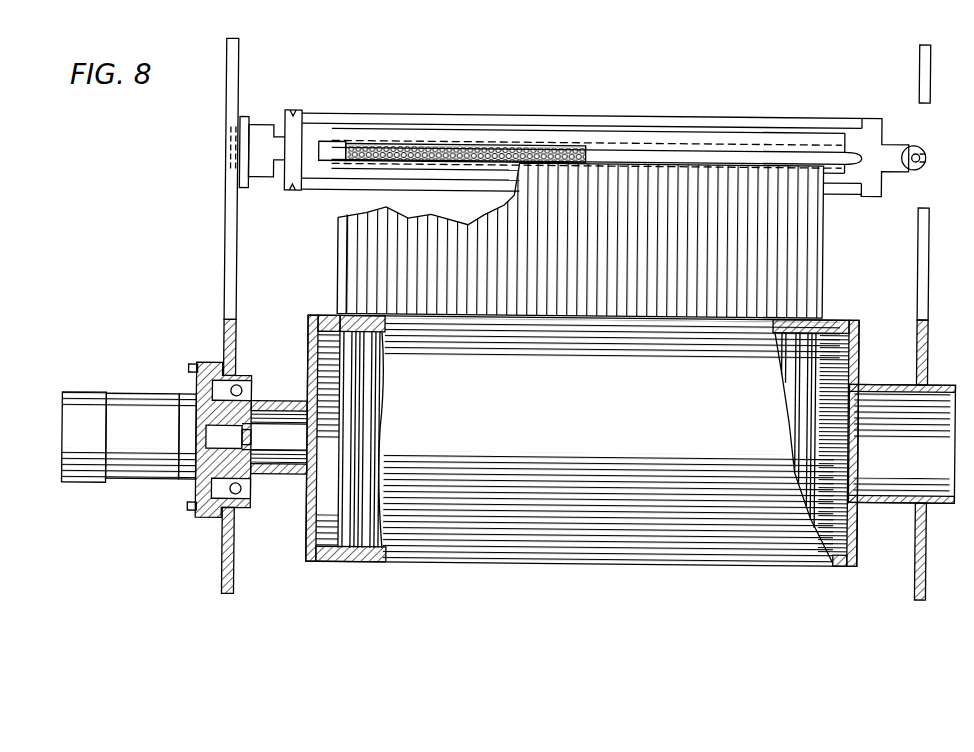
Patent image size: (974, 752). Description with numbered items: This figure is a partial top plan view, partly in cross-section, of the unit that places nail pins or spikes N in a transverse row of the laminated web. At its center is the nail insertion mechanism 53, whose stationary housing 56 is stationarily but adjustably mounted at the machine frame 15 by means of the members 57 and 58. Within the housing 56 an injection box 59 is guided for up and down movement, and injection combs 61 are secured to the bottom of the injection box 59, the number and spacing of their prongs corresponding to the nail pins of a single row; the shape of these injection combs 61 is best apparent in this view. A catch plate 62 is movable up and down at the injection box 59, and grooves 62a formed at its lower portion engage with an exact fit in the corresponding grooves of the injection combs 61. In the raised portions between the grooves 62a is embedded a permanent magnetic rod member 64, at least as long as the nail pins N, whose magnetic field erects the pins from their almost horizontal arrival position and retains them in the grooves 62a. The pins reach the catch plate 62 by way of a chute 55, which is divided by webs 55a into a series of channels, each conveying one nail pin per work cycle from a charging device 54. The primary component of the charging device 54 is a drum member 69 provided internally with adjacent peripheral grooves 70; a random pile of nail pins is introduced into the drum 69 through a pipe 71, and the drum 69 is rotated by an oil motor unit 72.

The machine frame 15 is at (229, 278).
The insertion mechanism 53 is at (578, 124).
The charging device 54 is at (424, 560).
The chute 55 is at (802, 263).
The web 55a is at (362, 285).
The stationary housing 56 is at (310, 120).
The mounting member 57 is at (288, 134).
The mounting member 58 is at (870, 136).
The injection box 59 is at (586, 130).
The injection comb 61 is at (426, 137).
The catch plate 62 is at (333, 150).
The groove 62a is at (487, 150).
The permanent magnetic rod member 64 is at (382, 150).
The drum member 69 is at (688, 533).
The peripheral groove 70 is at (351, 546).
The pipe 71 is at (890, 468).
The oil motor unit 72 is at (137, 427).
The nail pin N is at (356, 164).